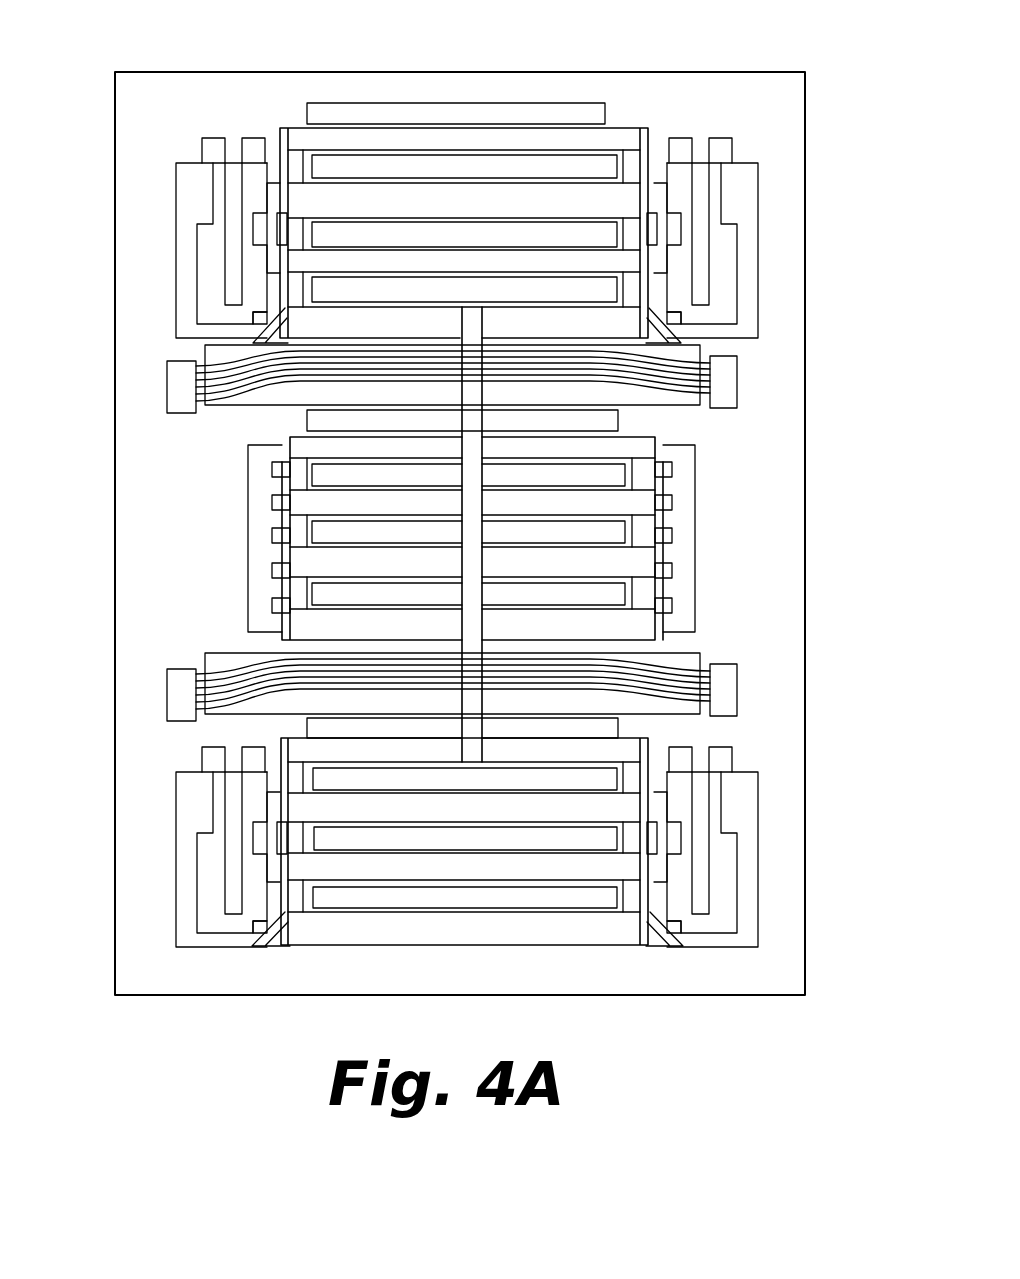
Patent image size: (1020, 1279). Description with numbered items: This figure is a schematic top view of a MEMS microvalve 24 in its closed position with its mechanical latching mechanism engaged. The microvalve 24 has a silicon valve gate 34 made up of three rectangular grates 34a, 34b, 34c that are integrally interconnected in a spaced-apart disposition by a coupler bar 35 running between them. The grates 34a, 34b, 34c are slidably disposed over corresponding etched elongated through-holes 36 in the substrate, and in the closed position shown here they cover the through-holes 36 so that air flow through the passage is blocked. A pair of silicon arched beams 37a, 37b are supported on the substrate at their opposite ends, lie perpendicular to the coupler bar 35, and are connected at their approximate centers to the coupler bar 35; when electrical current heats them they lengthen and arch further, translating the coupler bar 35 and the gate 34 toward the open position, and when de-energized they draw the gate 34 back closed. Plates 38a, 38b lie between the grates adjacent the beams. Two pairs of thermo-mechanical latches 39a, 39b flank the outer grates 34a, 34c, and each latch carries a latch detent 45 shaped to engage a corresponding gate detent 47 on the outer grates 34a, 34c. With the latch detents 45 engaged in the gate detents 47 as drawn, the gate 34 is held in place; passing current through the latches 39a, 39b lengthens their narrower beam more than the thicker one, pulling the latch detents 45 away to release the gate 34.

The microvalve 24 is at (736, 56).
The silicon valve gate 34 is at (290, 131).
The rectangular grate 34a is at (290, 380).
The rectangular grate 34b is at (300, 562).
The rectangular grate 34c is at (300, 810).
The coupler bar 35 is at (477, 622).
The elongated through-holes 36 is at (510, 237).
The silicon arched beam 37a is at (707, 380).
The silicon arched beam 37b is at (703, 667).
The first spacer plate 38a is at (652, 408).
The second spacer plate 38b is at (690, 700).
The thermo-mechanical latch 39a is at (206, 247).
The thermo-mechanical latch 39b is at (207, 861).
The latch detent 45 is at (258, 328).
The gate detent 47 is at (290, 324).